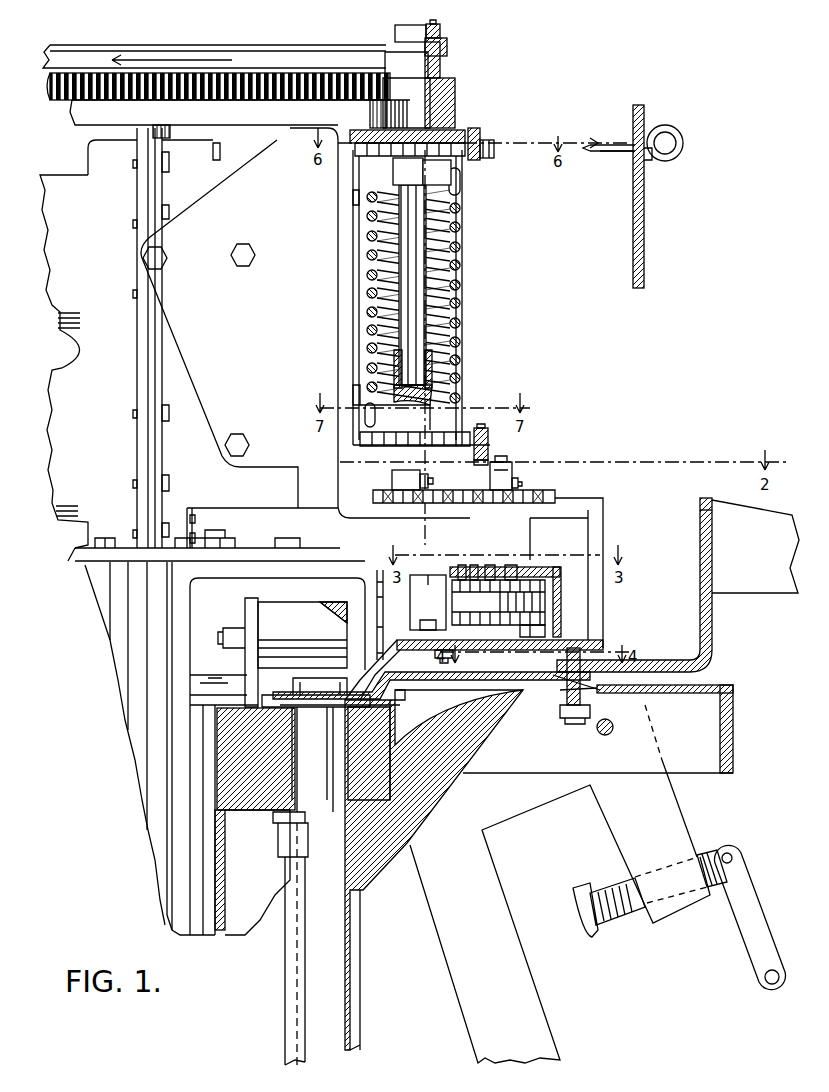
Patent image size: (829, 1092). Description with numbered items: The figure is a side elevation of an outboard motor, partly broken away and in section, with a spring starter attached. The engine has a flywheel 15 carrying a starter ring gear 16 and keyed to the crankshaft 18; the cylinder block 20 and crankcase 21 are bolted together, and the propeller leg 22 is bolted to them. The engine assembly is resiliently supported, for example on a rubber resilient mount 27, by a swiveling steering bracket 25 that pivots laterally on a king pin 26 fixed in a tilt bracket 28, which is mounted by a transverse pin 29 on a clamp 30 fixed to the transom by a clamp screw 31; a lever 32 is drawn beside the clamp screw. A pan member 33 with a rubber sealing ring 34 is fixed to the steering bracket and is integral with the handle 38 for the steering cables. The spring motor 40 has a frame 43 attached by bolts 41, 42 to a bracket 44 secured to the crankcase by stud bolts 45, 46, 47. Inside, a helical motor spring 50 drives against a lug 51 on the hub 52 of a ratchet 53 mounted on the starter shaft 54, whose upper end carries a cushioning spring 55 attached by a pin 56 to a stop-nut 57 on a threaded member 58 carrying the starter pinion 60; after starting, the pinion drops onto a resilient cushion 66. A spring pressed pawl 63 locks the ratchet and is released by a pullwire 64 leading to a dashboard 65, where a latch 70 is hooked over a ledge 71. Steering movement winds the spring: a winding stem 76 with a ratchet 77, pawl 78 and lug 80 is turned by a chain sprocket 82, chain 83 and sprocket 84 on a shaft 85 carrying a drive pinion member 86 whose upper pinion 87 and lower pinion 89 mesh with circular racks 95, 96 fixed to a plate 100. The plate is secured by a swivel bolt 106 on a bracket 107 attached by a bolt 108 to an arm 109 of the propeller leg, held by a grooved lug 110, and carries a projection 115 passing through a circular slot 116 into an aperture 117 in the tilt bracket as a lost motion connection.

The flywheel 15 is at (76, 50).
The starter ring gear 16 is at (58, 96).
The crankshaft 18 is at (138, 128).
The cylinder block 20 is at (57, 290).
The crankcase 21 is at (279, 504).
The propeller leg 22 is at (118, 636).
The swiveling steering bracket 25 is at (249, 810).
The king pin 26 is at (318, 781).
The resilient mount 27 is at (296, 627).
The tilt bracket 28 is at (395, 850).
The transverse pin 29 is at (610, 733).
The clamp 30 is at (610, 825).
The clamp screw 31 is at (625, 918).
The lever 32 is at (750, 917).
The pan member 33 is at (713, 640).
The rubber sealing ring 34 is at (708, 500).
The handle 38 is at (748, 579).
The spring motor 40 is at (463, 364).
The bolt 41 is at (360, 200).
The bolt 42 is at (355, 392).
The frame 43 is at (340, 285).
The bracket 44 is at (271, 333).
The stud bolt 45 is at (162, 258).
The stud bolt 46 is at (250, 258).
The stud bolt 47 is at (246, 445).
The helical wind-up motor spring 50 is at (460, 283).
The lug 51 is at (445, 175).
The hub 52 is at (416, 175).
The ratchet 53 is at (461, 176).
The starter shaft 54 is at (425, 246).
The cushioning spring 55 is at (442, 31).
The pin 56 is at (428, 58).
The stop-nut 57 is at (447, 46).
The member 58 is at (430, 80).
The starter pinion 60 is at (456, 108).
The spring pressed pawl 63 is at (482, 148).
The flexible pullwire 64 is at (535, 150).
The dashboard 65 is at (642, 205).
The resilient cushion 66 is at (368, 130).
The latch 70 is at (612, 146).
The ledge 71 is at (632, 155).
The spring winding stem 76 is at (427, 405).
The ratchet 77 is at (419, 428).
The spring pressed pawl 78 is at (485, 450).
The lug 80 is at (395, 417).
The chain sprocket 82 is at (395, 480).
The chain 83 is at (465, 485).
The sprocket 84 is at (520, 484).
The shaft 85 is at (505, 462).
The drive pinion member 86 is at (480, 608).
The upper toothed pinion 87 is at (460, 585).
The lower toothed pinion 89 is at (546, 623).
The circular toothed rack 95 is at (556, 585).
The circular toothed rack 96 is at (432, 609).
The plate 100 is at (505, 650).
The swivel bolt 106 is at (318, 700).
The bracket 107 is at (350, 598).
The bolt 108 is at (378, 570).
The arm 109 is at (292, 560).
The lug 110 is at (602, 608).
The projection 115 is at (558, 703).
The circular slot 116 is at (560, 682).
The aperture 117 is at (588, 708).